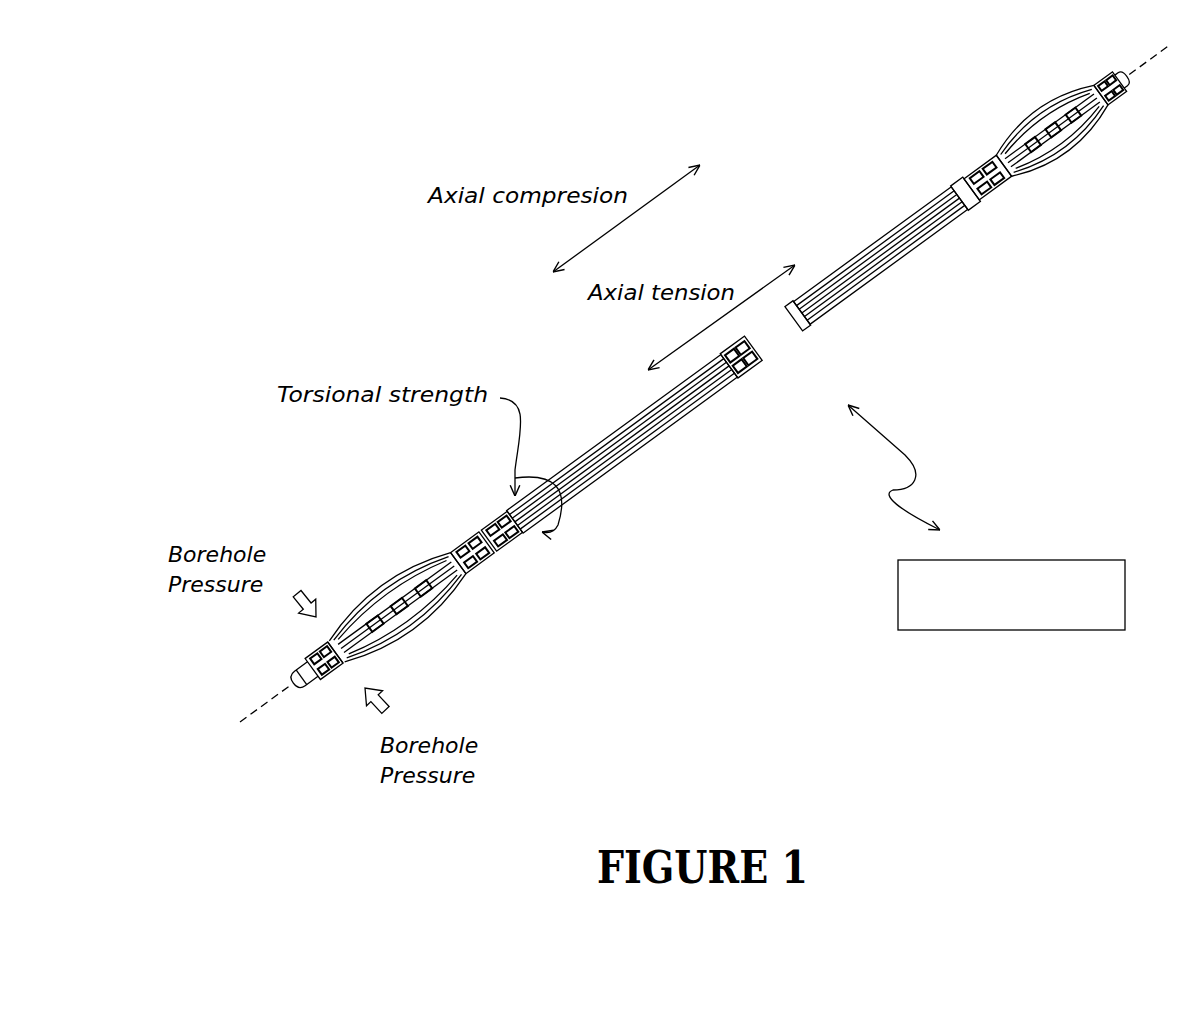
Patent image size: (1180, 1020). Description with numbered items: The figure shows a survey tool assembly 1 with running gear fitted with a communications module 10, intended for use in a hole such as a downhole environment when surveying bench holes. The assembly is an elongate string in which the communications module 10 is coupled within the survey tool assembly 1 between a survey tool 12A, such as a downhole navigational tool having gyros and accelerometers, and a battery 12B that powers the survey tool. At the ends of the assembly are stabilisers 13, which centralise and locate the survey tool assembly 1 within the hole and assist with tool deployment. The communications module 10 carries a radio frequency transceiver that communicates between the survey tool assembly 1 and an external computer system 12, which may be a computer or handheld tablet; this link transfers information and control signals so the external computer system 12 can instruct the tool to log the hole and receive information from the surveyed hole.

The survey tool assembly 1 is at (835, 176).
The communications module 10 is at (815, 330).
The external computer system 12 is at (1052, 557).
The survey tool 12A is at (580, 500).
The battery 12B is at (905, 260).
The stabilisers 13 is at (398, 570).